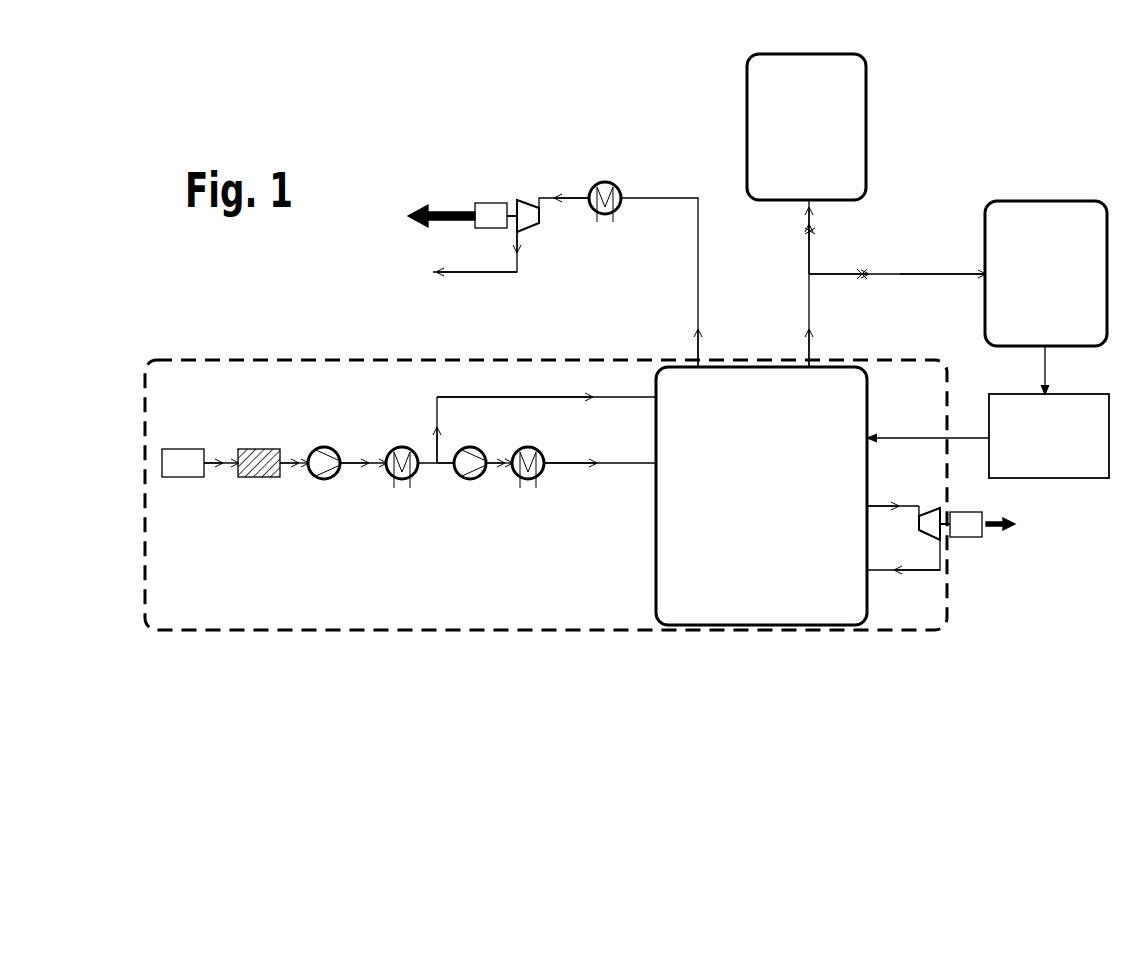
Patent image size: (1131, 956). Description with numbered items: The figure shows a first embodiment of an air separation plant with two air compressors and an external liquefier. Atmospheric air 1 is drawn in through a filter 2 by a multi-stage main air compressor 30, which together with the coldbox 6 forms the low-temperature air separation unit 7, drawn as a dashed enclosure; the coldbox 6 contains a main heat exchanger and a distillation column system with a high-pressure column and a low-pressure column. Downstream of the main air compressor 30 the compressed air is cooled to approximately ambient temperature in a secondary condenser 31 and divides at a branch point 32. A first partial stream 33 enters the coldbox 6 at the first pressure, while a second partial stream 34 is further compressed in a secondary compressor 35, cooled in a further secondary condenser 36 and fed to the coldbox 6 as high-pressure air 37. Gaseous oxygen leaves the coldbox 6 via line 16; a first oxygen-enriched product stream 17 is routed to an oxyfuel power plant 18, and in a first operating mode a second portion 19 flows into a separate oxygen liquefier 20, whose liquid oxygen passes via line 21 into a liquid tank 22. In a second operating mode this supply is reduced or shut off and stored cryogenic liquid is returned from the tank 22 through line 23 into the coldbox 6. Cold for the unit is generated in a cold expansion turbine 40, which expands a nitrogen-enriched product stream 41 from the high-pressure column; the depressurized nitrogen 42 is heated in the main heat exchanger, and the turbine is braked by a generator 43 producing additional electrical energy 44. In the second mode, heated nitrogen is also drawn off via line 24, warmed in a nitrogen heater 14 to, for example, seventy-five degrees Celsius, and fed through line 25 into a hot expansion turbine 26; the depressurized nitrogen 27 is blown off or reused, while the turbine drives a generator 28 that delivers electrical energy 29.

The atmospheric air 1 is at (190, 480).
The filter 2 is at (263, 478).
The coldbox 6 is at (761, 496).
The low-temperature air separation unit 7 is at (324, 630).
The nitrogen heater 14 is at (608, 183).
The line 16 is at (805, 314).
The first oxygen-enriched product stream 17 is at (805, 258).
The oxyfuel power plant 18 is at (806, 127).
The second portion of the oxygen product 19 is at (931, 277).
The oxygen liquefier 20 is at (1046, 273).
The line 21 is at (1040, 368).
The liquid tank 22 is at (1049, 436).
The line 23 is at (966, 437).
The line 24 is at (695, 244).
The line 25 is at (548, 194).
The hot expansion turbine 26 is at (543, 218).
The actively depressurized nitrogen 27 is at (520, 275).
The generator 28 is at (492, 204).
The electrical energy 29 is at (447, 210).
The main air compressor 30 is at (331, 479).
The secondary condenser 31 is at (402, 480).
The branch point 32 is at (437, 470).
The first partial stream 33 is at (498, 400).
The second partial stream 34 is at (451, 470).
The secondary compressor 35 is at (474, 480).
The secondary condenser 36 is at (528, 480).
The high-pressure air 37 is at (609, 468).
The cold expansion turbine 40 is at (934, 509).
The nitrogen-enriched product stream 41 is at (895, 503).
The actively depressurized nitrogen 42 is at (922, 574).
The generator 43 is at (975, 509).
The electrical energy 44 is at (998, 519).